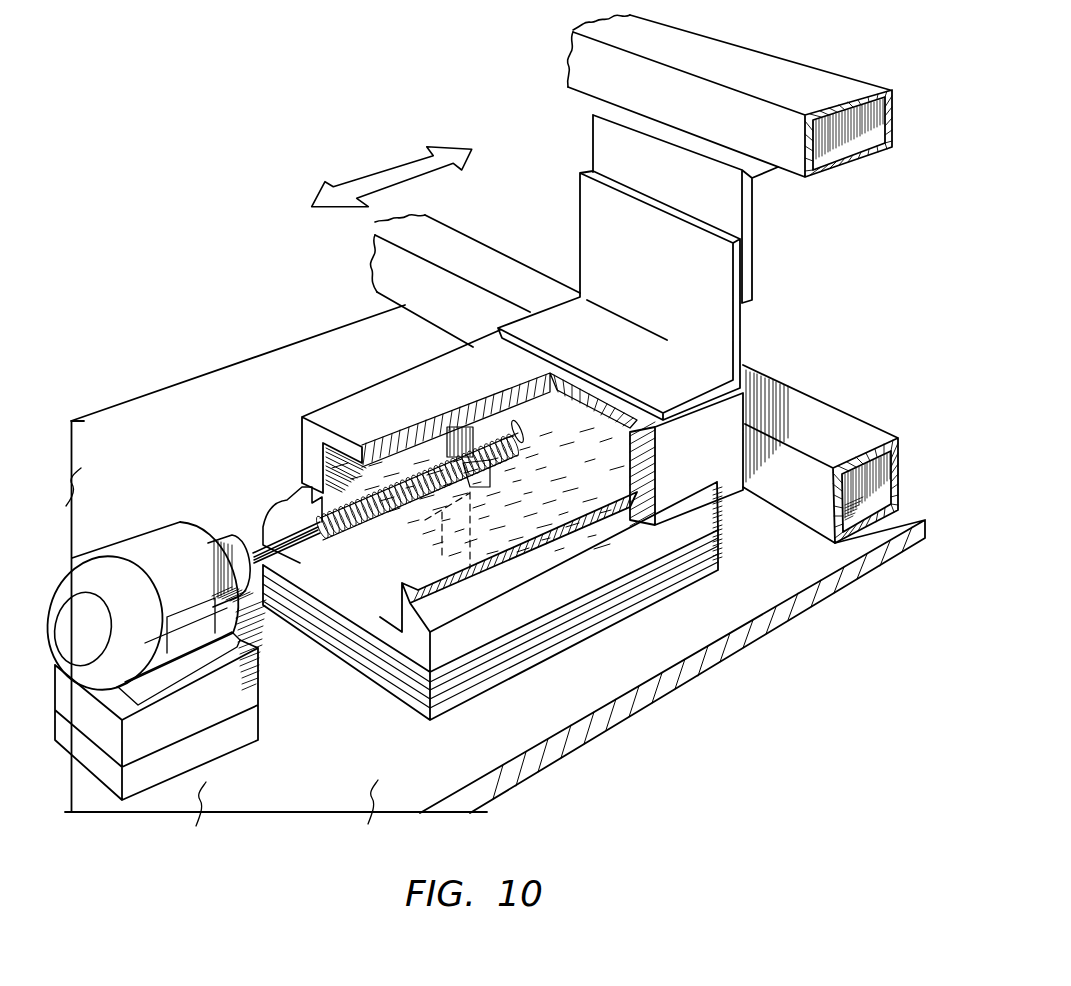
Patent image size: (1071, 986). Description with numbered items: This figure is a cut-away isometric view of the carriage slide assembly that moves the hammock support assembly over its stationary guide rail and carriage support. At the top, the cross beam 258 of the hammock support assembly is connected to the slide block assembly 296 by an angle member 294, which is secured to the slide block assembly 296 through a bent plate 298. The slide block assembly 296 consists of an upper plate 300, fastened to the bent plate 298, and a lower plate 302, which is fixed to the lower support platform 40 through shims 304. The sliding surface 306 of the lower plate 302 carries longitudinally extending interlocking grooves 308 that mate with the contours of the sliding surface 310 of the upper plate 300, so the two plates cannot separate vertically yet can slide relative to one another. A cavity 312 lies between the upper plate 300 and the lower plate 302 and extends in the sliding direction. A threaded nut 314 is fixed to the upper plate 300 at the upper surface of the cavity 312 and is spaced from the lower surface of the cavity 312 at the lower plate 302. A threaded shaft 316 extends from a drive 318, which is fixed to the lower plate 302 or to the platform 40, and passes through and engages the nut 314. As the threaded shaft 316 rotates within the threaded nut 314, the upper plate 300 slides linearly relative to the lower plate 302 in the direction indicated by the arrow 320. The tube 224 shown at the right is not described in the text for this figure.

The lower support platform 40 is at (842, 588).
The rectangular tube 224 is at (830, 404).
The cross beam 258 is at (765, 54).
The angle member 294 is at (752, 197).
The slide block assembly 296 is at (370, 333).
The bent plate 298 is at (743, 317).
The upper plate 300 is at (302, 440).
The lower plate 302 is at (257, 537).
The shims 304 is at (720, 557).
The sliding surface 306 is at (433, 578).
The interlocking grooves 308 is at (447, 608).
The sliding surface 310 is at (638, 520).
The cavity 312 is at (317, 563).
The threaded nut 314 is at (503, 436).
The threaded shaft 316 is at (303, 503).
The drive 318 is at (138, 545).
The arrow 320 is at (390, 168).